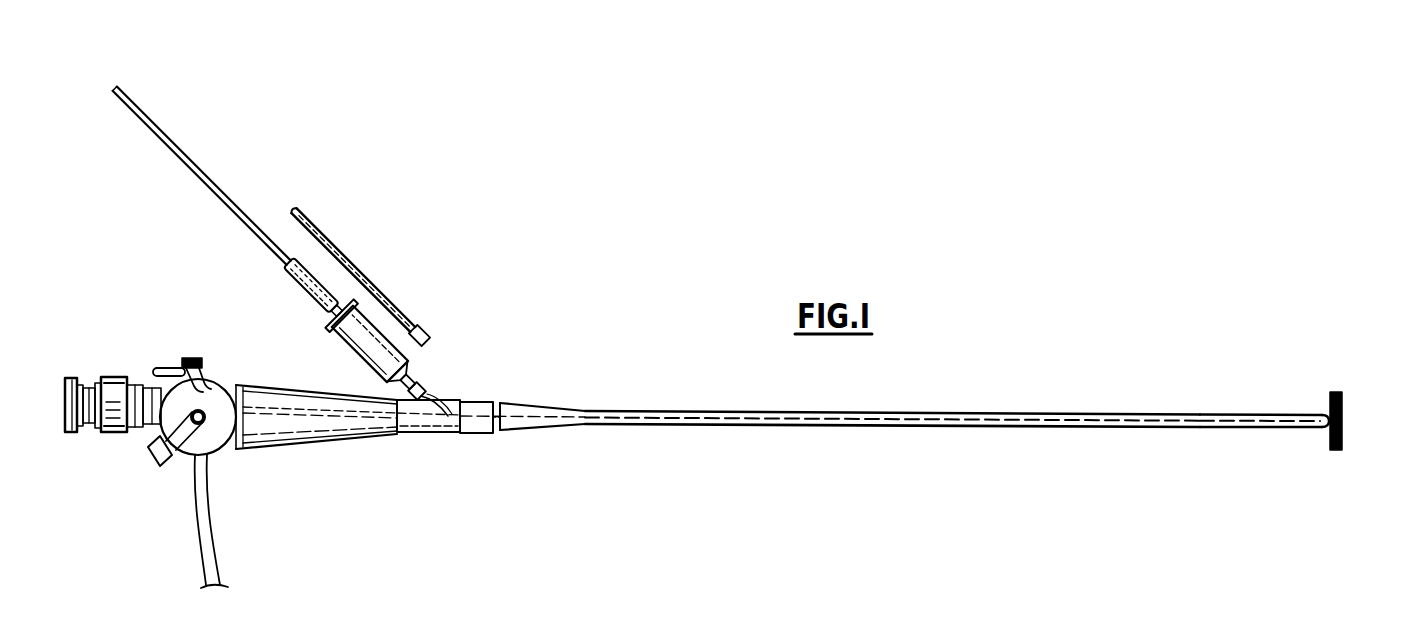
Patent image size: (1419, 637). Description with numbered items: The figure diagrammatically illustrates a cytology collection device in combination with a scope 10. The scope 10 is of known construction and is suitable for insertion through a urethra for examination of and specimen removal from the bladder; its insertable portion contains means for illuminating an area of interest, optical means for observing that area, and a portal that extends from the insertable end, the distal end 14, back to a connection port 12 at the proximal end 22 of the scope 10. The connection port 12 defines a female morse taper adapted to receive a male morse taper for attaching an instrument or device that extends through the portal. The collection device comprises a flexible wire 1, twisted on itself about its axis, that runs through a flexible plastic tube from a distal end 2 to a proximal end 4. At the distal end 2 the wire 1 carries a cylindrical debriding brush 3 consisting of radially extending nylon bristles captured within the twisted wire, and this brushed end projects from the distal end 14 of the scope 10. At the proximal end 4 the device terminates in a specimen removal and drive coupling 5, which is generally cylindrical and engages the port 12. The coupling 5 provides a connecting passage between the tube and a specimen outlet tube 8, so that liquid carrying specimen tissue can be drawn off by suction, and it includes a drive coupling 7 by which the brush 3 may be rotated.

The flexible wire 1 is at (1078, 428).
The distal end 2 is at (1343, 428).
The debriding brush 3 is at (1343, 408).
The proximal end 4 is at (424, 389).
The specimen removal and drive coupling 5 is at (342, 342).
The drive coupling 7 is at (336, 311).
The specimen outlet tube 8 is at (372, 280).
The scope 10 is at (351, 438).
The connection port 12 is at (431, 393).
The distal end 14 is at (1305, 428).
The proximal end 22 is at (385, 440).